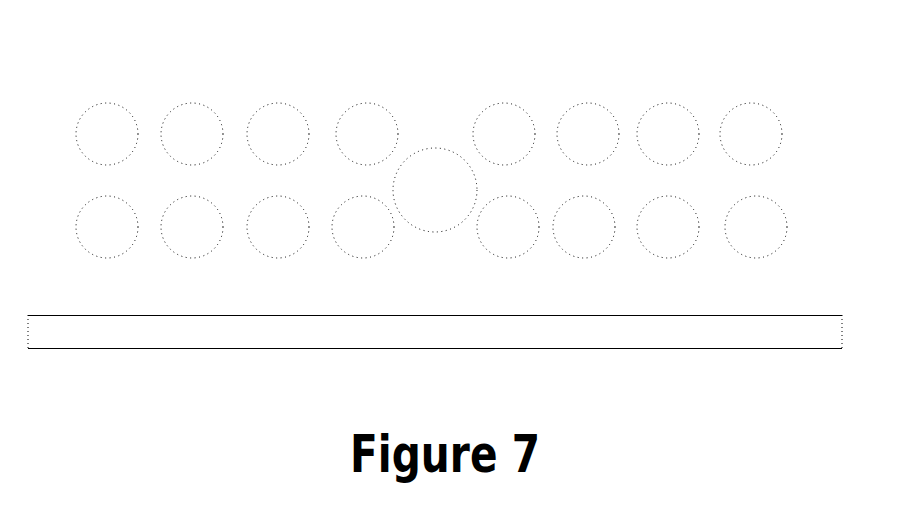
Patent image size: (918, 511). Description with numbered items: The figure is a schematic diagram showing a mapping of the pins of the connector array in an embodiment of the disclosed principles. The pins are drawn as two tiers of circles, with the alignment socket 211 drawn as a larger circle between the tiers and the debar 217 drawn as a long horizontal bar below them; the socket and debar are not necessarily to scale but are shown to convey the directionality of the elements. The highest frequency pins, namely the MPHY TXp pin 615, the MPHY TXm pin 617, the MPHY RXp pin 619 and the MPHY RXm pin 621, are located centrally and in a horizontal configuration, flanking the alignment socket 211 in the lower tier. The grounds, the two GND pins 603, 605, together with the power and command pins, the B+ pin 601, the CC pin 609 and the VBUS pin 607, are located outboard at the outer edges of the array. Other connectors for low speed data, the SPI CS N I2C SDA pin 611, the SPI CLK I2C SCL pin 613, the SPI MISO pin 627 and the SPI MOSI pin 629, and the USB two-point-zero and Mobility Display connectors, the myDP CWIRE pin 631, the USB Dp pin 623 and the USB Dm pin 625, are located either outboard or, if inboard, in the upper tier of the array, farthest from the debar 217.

The B+ pin 601 is at (92, 144).
The GND pin 603 is at (92, 230).
The GND pin 605 is at (741, 230).
The VBUS pin 607 is at (177, 144).
The CC pin 609 is at (177, 236).
The SPI CS N I2C SDA pin 611 is at (263, 144).
The SPI CLK I2C SCL pin 613 is at (352, 144).
The MPHY TXp pin 615 is at (263, 236).
The MPHY TXm pin 617 is at (348, 236).
The MPHY RXp pin 619 is at (493, 236).
The MPHY RXm pin 621 is at (569, 236).
The USB Dp pin 623 is at (489, 144).
The USB Dm pin 625 is at (573, 144).
The SPI MISO pin 627 is at (653, 144).
The SPI MOSI pin 629 is at (736, 144).
The myDP CWIRE pin 631 is at (653, 236).
The alignment socket 211 is at (420, 200).
The debar 217 is at (420, 340).